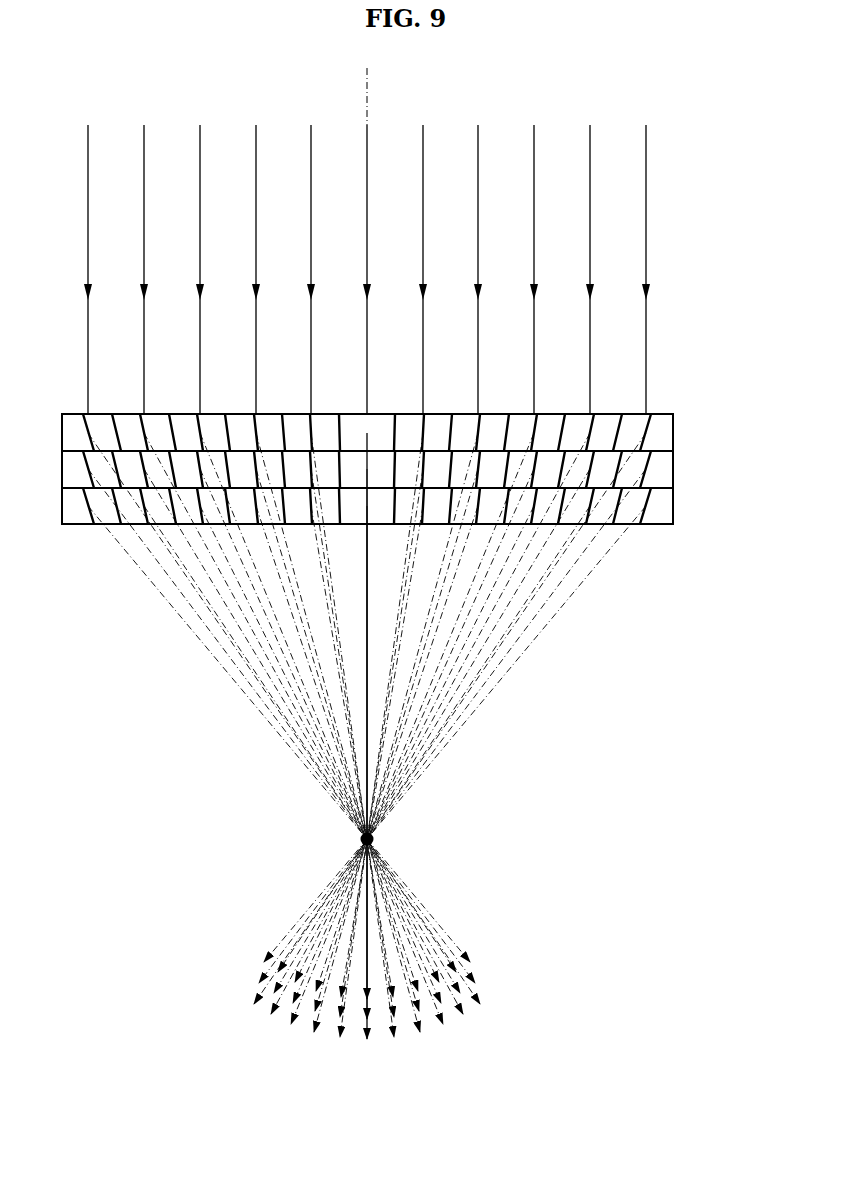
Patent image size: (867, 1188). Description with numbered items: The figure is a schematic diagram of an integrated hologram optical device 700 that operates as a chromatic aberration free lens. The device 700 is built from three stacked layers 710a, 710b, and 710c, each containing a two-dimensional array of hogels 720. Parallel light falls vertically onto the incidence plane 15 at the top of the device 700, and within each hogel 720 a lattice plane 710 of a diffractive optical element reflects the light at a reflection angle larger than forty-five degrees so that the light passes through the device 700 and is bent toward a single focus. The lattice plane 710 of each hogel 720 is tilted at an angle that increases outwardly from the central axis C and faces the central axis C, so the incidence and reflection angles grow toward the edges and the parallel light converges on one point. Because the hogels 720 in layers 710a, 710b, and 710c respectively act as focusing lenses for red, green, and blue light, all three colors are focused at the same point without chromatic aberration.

The integrated hologram optical device 700 is at (408, 491).
The lattice plane 710 is at (89, 425).
The layer 710a is at (416, 550).
The layer 710b is at (674, 469).
The layer 710c is at (407, 415).
The incidence plane 15 is at (660, 414).
The hogels 720 is at (595, 516).
The central axis C is at (368, 107).